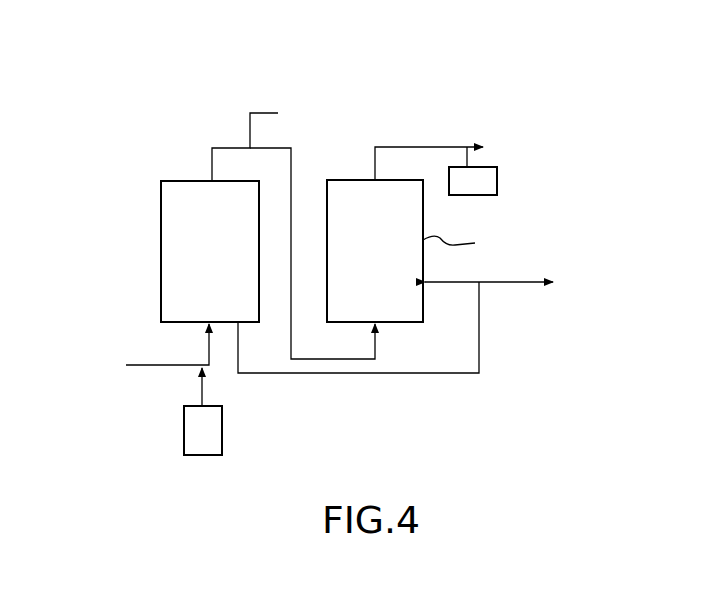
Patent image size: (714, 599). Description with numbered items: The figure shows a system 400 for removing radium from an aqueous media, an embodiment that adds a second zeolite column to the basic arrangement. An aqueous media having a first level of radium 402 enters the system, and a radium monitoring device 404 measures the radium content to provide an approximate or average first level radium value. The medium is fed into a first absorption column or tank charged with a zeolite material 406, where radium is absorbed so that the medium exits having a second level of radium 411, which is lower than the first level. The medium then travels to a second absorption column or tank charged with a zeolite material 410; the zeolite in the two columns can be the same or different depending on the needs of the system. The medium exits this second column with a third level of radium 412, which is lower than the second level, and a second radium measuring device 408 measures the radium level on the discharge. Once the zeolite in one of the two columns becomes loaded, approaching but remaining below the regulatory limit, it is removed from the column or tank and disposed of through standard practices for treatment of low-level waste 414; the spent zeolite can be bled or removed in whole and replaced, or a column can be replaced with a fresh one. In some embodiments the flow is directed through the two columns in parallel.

The system 400 is at (135, 76).
The aqueous media having a first level of radium 402 is at (141, 367).
The radium monitoring device 404 is at (212, 436).
The first absorption column 406 is at (161, 253).
The second radium measuring device 408 is at (497, 180).
The second absorption column 410 is at (345, 180).
The second level of radium 411 is at (264, 112).
The third level of radium 412 is at (400, 147).
The low-level waste 414 is at (493, 284).